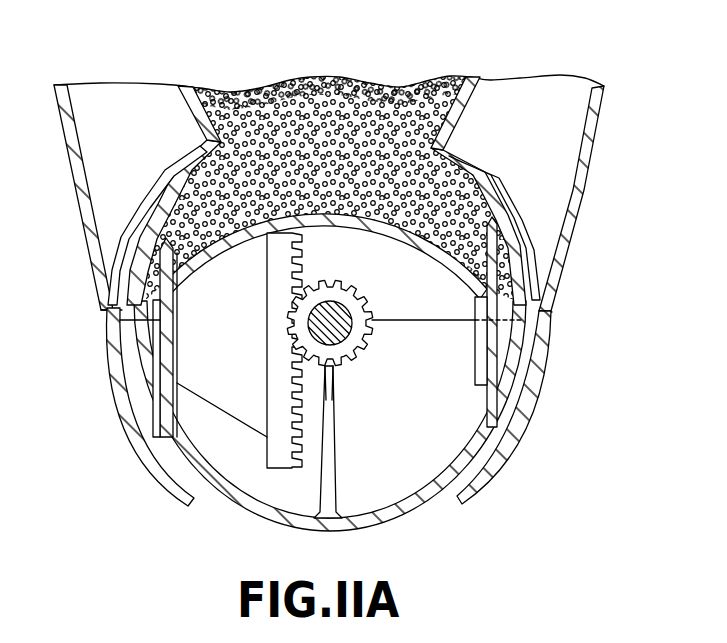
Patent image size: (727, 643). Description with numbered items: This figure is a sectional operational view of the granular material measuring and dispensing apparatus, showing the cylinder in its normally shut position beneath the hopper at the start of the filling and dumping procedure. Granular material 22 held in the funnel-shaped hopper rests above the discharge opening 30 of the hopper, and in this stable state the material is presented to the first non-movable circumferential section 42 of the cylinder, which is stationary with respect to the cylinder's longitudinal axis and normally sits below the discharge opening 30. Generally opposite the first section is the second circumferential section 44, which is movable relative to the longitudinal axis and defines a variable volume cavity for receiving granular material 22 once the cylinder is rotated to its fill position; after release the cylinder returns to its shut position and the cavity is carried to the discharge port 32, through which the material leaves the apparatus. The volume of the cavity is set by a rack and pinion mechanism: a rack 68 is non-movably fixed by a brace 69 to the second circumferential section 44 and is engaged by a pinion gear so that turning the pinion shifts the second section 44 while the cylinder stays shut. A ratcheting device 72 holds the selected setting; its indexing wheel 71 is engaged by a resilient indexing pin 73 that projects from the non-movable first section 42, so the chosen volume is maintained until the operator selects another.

The granular material 22 is at (377, 86).
The discharge opening 30 is at (443, 118).
The second circumferential section 44 is at (360, 230).
The first non-movable circumferential section 42 is at (208, 476).
The discharge port 32 is at (198, 506).
The rack 68 is at (273, 297).
The brace 69 is at (205, 387).
The indexing wheel 71 is at (358, 297).
The ratcheting device 72 is at (343, 378).
The resilient indexing pin 73 is at (335, 457).